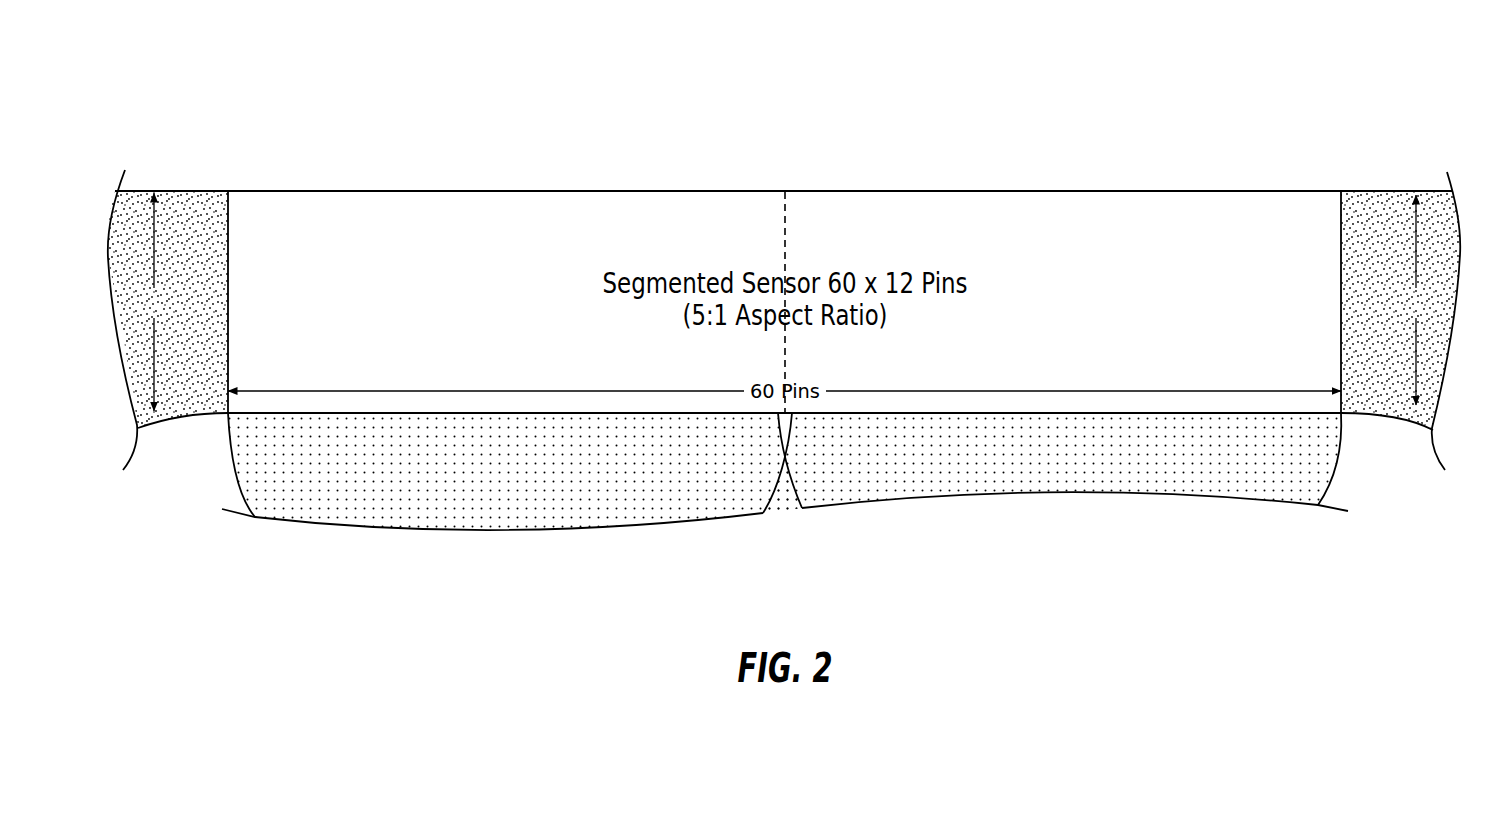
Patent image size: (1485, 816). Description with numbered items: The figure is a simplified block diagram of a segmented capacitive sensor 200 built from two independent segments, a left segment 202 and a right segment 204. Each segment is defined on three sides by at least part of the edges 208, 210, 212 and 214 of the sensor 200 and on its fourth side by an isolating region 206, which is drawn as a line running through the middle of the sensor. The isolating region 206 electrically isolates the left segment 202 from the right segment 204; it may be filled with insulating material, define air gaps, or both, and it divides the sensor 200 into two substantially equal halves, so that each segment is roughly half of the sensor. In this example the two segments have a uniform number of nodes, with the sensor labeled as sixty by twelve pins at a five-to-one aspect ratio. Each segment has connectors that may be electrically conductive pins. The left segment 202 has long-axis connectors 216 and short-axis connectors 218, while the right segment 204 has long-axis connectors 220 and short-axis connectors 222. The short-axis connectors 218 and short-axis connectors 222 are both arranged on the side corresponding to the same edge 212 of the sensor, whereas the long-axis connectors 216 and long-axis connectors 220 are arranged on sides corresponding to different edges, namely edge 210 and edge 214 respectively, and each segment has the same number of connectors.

The segmented sensor 200 is at (1358, 83).
The left segment 202 is at (524, 315).
The right segment 204 is at (1081, 315).
The isolating region 206 is at (784, 212).
The edge 208 is at (528, 190).
The edge 210 is at (228, 361).
The edge 212 is at (912, 413).
The edge 214 is at (1341, 361).
The long-axis connectors 216 is at (155, 302).
The short-axis connectors 218 is at (778, 461).
The long-axis connectors 220 is at (1417, 300).
The short-axis connectors 222 is at (1341, 461).